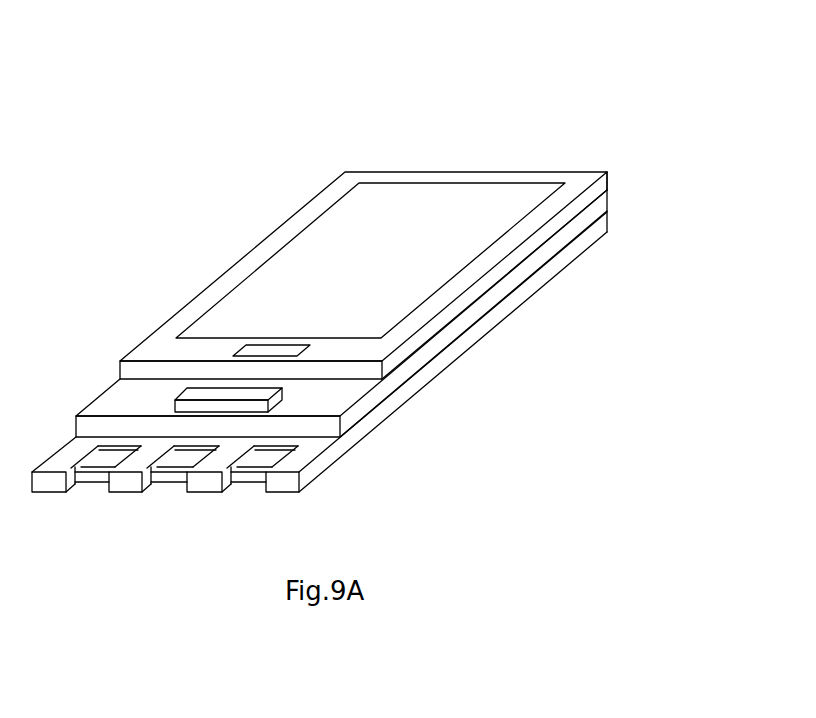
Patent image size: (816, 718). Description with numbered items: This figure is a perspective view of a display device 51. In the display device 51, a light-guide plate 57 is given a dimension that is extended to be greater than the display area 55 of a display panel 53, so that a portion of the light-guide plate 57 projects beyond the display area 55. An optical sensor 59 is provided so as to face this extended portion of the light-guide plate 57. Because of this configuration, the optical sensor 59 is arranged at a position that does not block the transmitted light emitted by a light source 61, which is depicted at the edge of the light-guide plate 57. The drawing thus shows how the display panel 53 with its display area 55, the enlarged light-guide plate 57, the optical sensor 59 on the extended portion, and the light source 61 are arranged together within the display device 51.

The display device 51 is at (528, 332).
The display panel 53 is at (581, 178).
The display area 55 is at (512, 197).
The light-guide plate 57 is at (365, 423).
The optical sensor 59 is at (253, 348).
The light source 61 is at (86, 480).